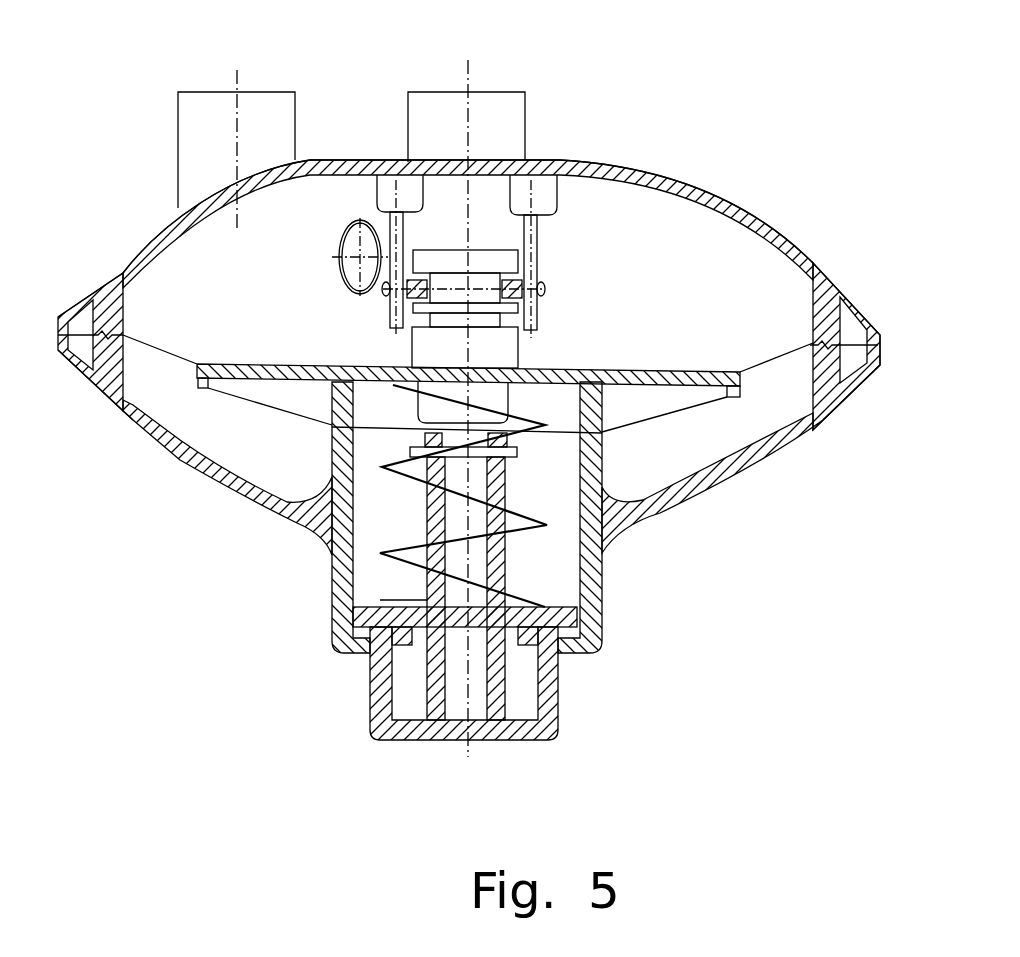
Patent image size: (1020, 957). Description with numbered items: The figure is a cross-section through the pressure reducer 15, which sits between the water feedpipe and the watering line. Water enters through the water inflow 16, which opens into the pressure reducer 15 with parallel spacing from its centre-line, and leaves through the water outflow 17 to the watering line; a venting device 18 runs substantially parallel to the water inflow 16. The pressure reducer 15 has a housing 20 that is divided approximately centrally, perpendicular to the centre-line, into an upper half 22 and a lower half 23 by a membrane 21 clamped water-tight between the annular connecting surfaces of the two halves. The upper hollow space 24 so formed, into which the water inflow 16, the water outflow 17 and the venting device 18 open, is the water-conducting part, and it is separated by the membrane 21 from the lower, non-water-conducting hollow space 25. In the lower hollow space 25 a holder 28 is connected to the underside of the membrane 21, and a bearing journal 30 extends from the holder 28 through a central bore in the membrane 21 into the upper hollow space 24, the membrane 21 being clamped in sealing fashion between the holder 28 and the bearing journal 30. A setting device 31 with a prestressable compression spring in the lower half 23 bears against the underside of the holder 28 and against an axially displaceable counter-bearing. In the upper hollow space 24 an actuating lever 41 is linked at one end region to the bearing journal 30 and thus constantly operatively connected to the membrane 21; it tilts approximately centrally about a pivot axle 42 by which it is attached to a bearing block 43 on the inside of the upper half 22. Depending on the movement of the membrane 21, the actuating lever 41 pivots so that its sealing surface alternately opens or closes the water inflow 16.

The pressure reducer 15 is at (178, 505).
The water inflow 16 is at (503, 112).
The water outflow 17 is at (352, 238).
The venting device 18 is at (202, 113).
The housing 20 is at (469, 255).
The membrane 21 is at (770, 358).
The upper half 22 is at (790, 235).
The lower half 23 is at (693, 505).
The upper hollow space 24 is at (742, 328).
The lower hollow space 25 is at (663, 468).
The holder 28 is at (310, 400).
The bearing journal 30 is at (438, 258).
The setting device 31 is at (363, 735).
The actuating lever 41 is at (542, 282).
The pivot axle 42 is at (546, 272).
The bearing block 43 is at (543, 322).